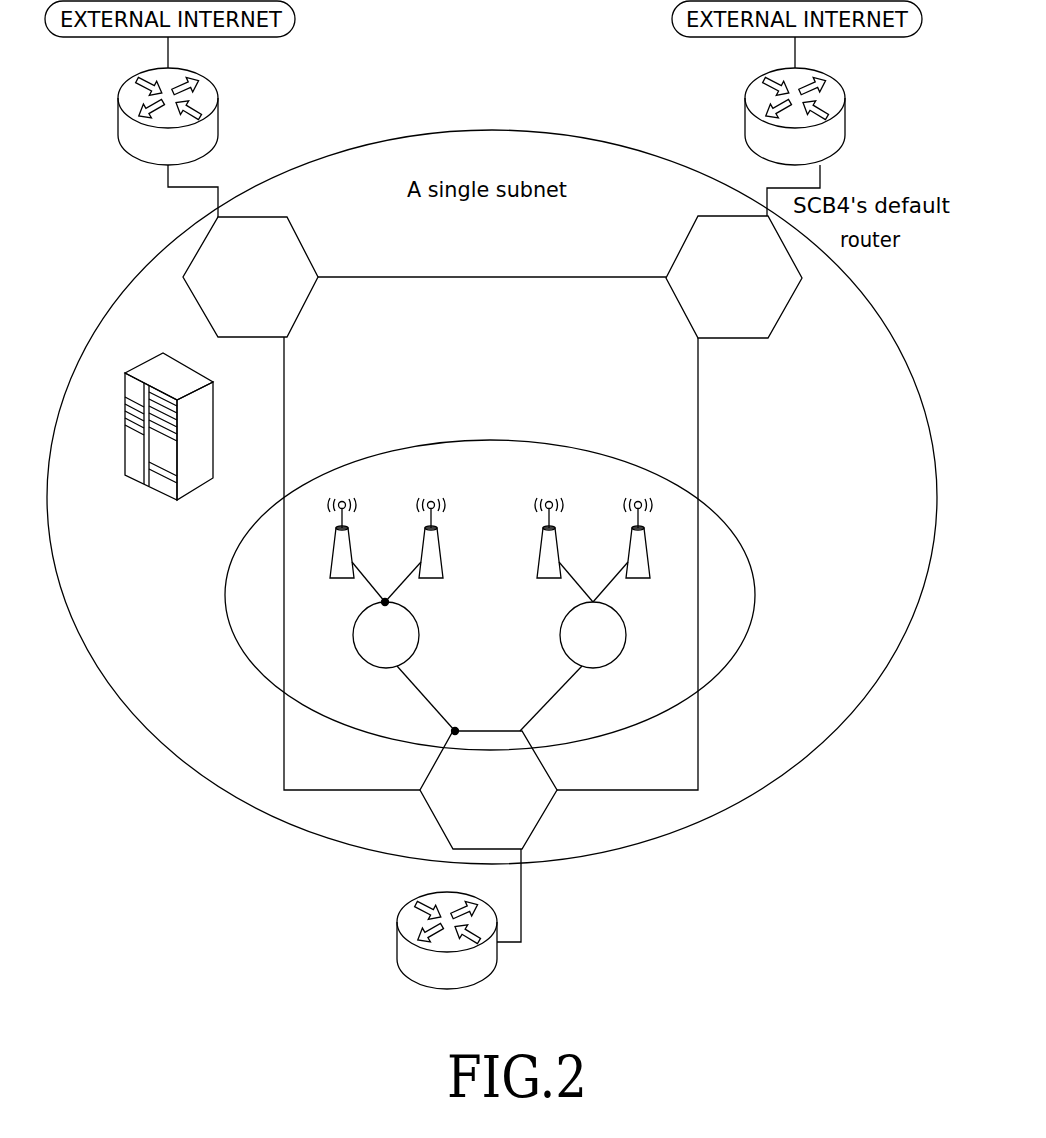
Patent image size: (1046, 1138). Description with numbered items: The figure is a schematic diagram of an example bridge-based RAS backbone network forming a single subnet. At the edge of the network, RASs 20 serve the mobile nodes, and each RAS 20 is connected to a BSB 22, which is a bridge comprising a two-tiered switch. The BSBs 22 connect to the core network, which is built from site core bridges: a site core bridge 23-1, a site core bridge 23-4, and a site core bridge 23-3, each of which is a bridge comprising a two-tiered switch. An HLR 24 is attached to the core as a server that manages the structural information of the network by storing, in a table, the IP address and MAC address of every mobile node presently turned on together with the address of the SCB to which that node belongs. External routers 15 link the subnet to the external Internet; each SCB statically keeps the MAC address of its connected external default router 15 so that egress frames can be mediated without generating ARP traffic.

The external router 15 is at (847, 97).
The site core bridge 23-1 is at (303, 303).
The site core bridge 23-4 is at (749, 338).
The site core bridge 23-3 is at (541, 816).
The home location register 24 is at (151, 488).
The RAS 20 is at (518, 516).
The base station bridge 22 is at (419, 635).